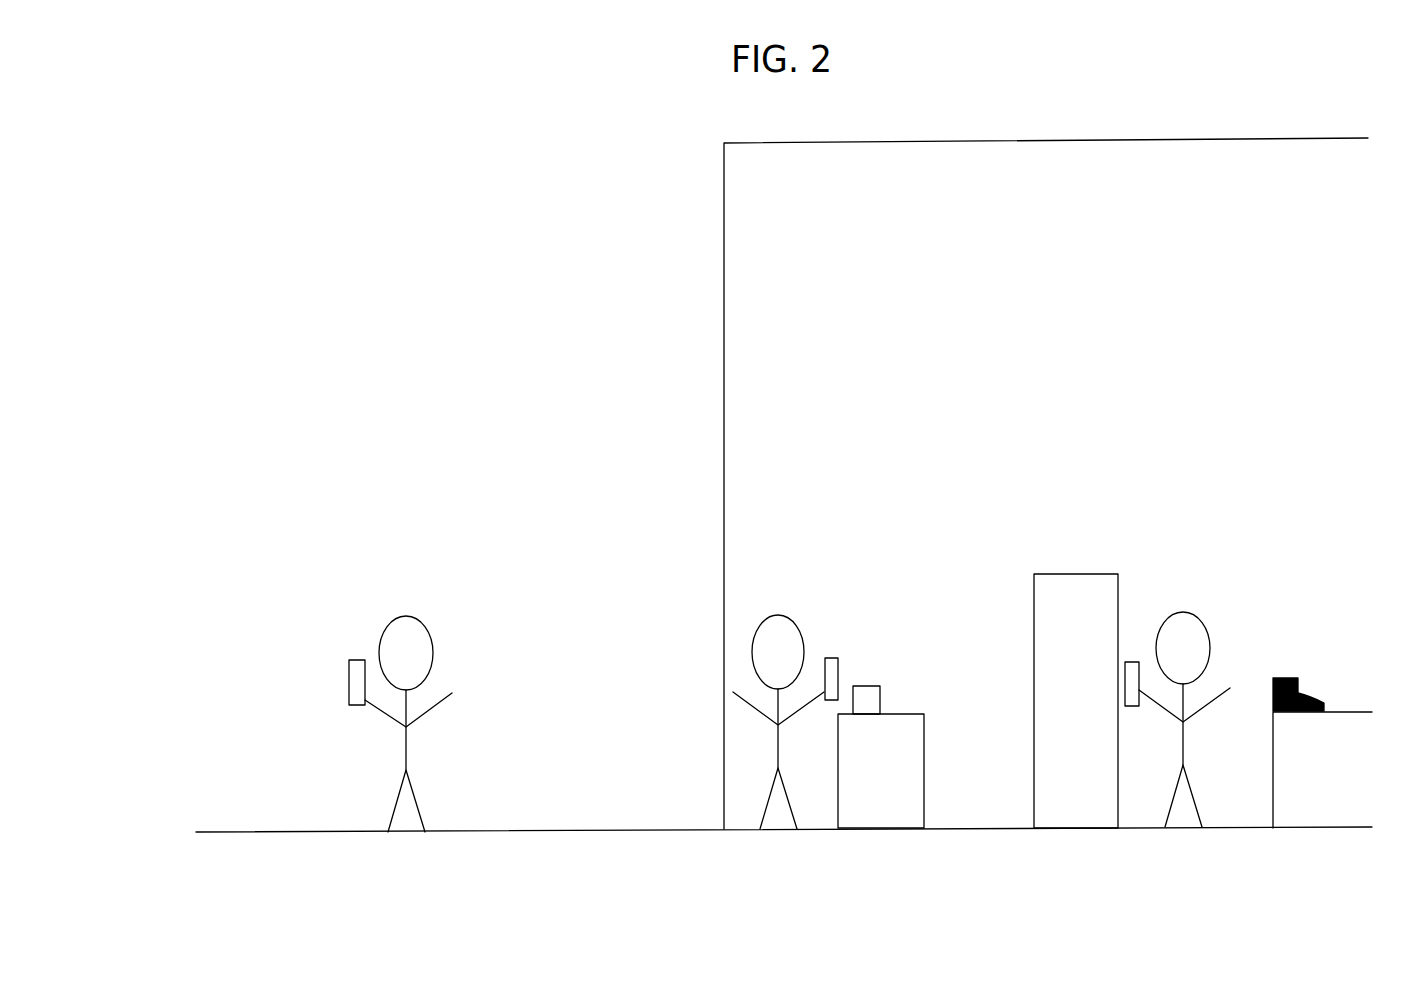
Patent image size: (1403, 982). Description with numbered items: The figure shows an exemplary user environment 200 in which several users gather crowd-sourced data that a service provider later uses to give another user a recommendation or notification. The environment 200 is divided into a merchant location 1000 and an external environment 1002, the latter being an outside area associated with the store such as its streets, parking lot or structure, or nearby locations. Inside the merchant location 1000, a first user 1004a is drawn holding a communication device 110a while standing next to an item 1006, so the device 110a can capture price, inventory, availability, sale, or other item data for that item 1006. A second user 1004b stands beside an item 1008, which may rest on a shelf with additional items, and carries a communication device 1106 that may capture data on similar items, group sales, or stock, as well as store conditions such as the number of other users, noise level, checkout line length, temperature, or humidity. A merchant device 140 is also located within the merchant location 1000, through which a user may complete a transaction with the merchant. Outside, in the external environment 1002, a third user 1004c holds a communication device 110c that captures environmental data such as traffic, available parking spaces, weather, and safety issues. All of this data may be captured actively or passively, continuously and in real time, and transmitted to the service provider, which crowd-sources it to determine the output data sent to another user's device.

The environment 200 is at (1090, 122).
The merchant location 1000 is at (1046, 483).
The external environment 1002 is at (390, 176).
The user 1004a is at (778, 600).
The user 1004b is at (1188, 596).
The user 1004c is at (406, 603).
The communication device 110a is at (838, 643).
The communication device 110c is at (338, 652).
The user device 1106 is at (1137, 657).
The item 1006 is at (866, 675).
The item 1008 is at (1062, 555).
The merchant device 140 is at (1272, 668).